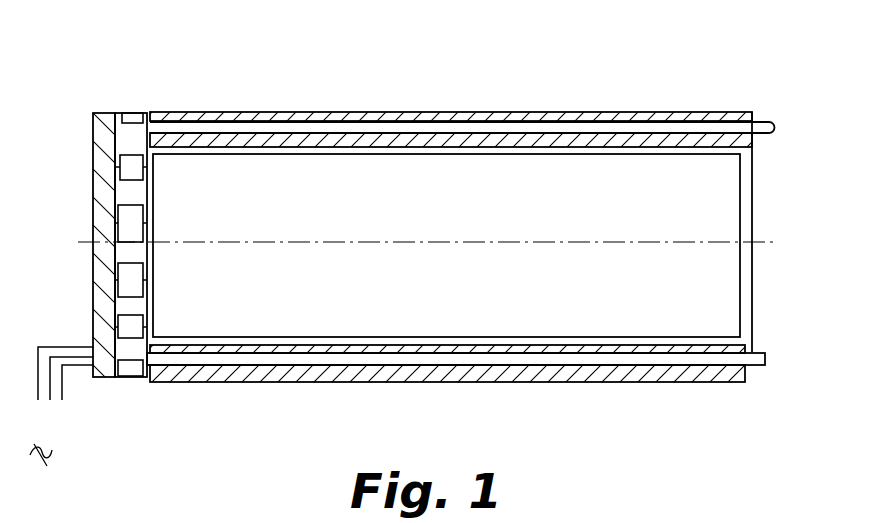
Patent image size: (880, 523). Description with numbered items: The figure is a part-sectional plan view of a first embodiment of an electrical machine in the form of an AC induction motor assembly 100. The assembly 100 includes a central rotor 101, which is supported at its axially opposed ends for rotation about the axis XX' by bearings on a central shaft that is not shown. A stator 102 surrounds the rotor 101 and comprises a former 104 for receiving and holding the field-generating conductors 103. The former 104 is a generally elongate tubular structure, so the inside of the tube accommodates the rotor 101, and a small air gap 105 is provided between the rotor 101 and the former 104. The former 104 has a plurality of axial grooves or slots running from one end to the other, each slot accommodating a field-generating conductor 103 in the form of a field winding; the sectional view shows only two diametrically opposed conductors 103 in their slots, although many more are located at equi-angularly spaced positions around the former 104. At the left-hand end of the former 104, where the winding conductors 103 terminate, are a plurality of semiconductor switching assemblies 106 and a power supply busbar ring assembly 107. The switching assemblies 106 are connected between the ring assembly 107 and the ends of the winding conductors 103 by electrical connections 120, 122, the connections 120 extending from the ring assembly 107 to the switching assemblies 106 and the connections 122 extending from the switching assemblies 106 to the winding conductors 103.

The AC induction motor assembly 100 is at (440, 241).
The central rotor 101 is at (587, 158).
The stator 102 is at (537, 106).
The field-generating conductors 103 is at (398, 356).
The former 104 is at (207, 380).
The air gap 105 is at (357, 152).
The semiconductor switching assemblies 106 is at (132, 113).
The power supply busbar ring assembly 107 is at (93, 128).
The electrical connections 120 is at (117, 116).
The electrical connections 122 is at (153, 127).